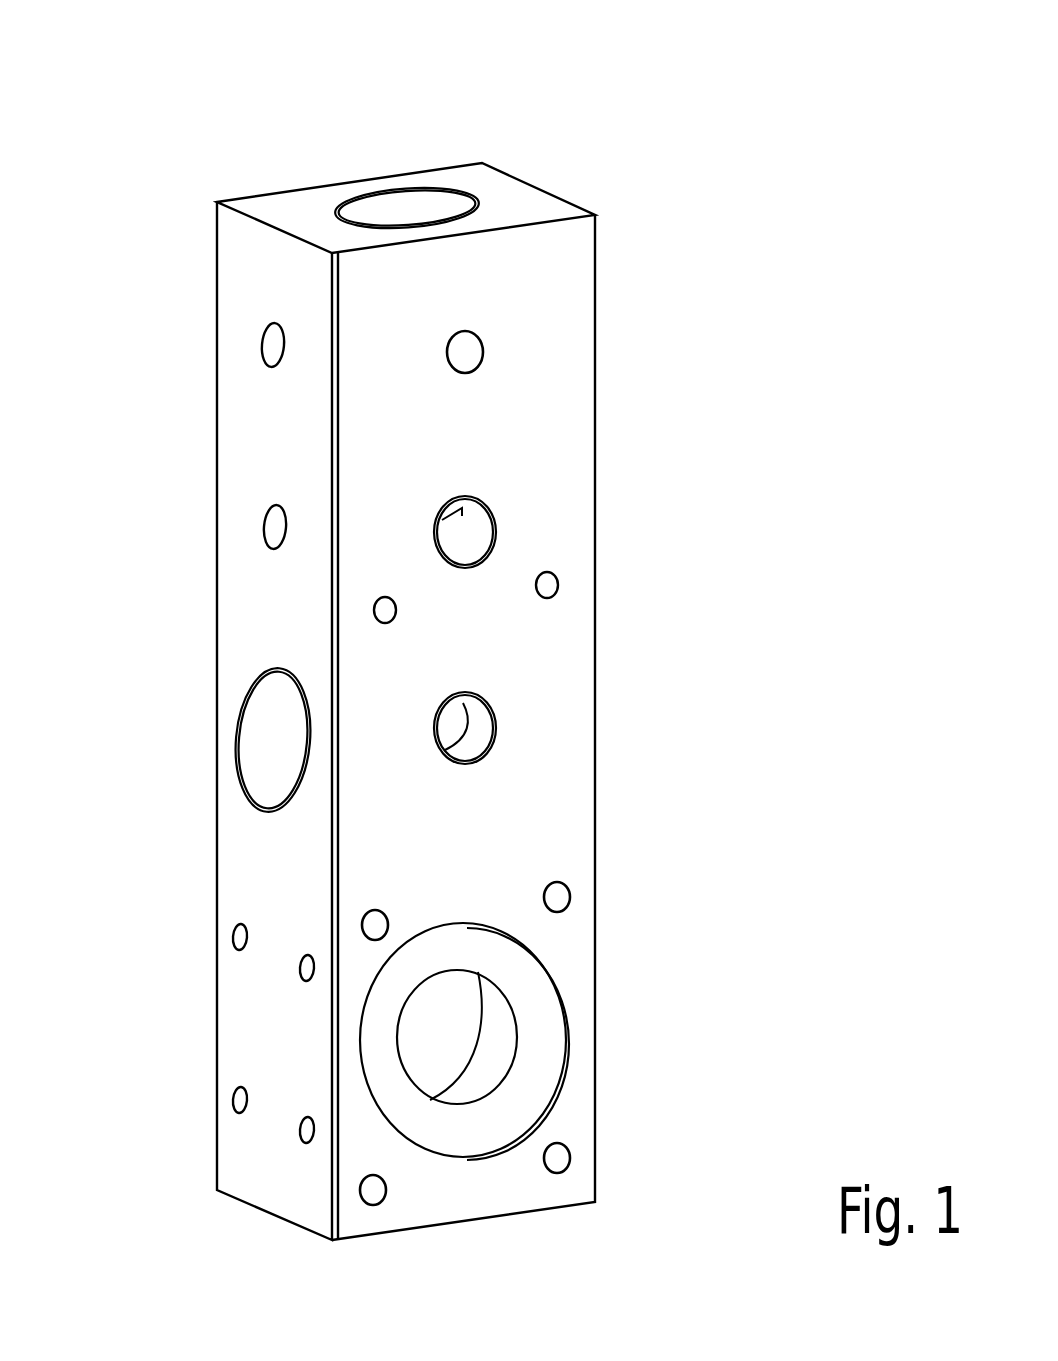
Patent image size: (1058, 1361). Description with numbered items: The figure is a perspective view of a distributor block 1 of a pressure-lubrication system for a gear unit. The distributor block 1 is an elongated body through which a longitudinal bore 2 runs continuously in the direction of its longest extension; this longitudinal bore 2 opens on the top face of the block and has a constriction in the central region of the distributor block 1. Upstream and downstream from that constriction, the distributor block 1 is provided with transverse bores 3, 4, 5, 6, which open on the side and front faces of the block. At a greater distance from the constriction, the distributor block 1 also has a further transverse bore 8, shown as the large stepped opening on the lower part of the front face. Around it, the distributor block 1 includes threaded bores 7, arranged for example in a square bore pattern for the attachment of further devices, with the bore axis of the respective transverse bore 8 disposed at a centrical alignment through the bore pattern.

The distributor block 1 is at (267, 458).
The longitudinal bore 2 is at (397, 207).
The transverse bore 3 is at (283, 763).
The transverse bore 4 is at (465, 712).
The transverse bore 5 is at (455, 536).
The transverse bore 6 is at (273, 347).
The threaded bores 7 is at (557, 897).
The further transverse bore 8 is at (452, 1047).